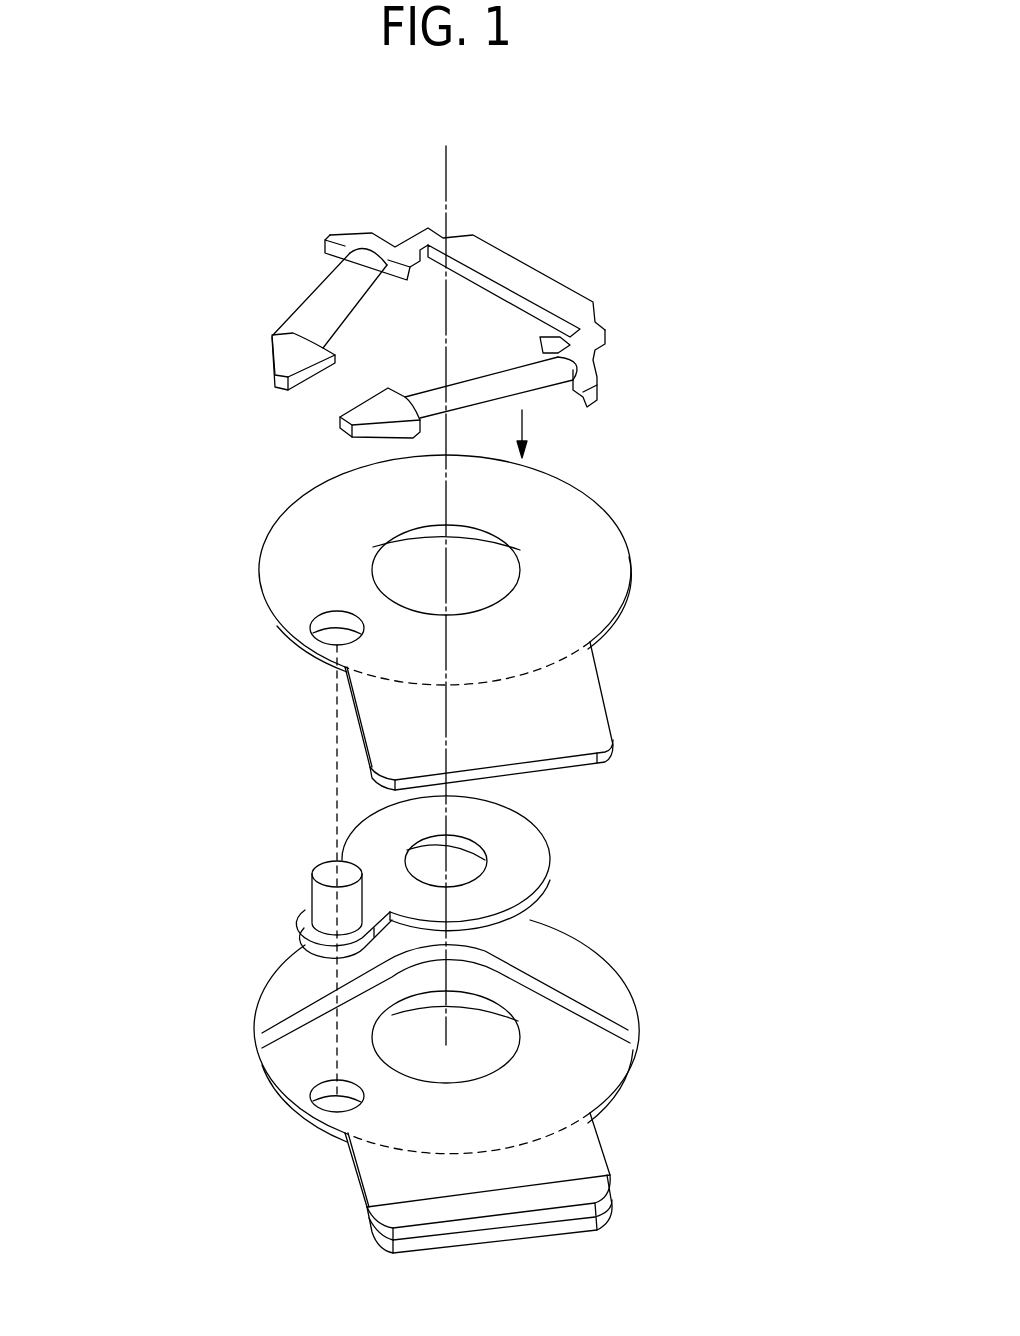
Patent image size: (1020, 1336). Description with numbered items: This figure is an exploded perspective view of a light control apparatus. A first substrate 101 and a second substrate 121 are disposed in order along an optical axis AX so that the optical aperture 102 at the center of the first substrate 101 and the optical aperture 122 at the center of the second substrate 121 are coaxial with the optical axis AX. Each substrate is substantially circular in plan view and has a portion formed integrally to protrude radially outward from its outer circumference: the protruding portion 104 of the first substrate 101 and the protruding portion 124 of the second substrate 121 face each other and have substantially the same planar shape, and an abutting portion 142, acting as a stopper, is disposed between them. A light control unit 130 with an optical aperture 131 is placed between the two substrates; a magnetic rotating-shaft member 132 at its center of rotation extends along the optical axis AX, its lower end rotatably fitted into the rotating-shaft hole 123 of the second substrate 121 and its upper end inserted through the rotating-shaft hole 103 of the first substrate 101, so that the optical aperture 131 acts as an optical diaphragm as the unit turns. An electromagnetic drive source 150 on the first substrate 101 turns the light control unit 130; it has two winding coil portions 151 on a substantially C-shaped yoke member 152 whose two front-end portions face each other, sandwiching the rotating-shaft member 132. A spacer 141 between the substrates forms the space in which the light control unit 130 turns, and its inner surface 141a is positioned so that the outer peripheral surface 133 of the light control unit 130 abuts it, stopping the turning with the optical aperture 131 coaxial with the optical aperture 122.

The optical axis AX is at (447, 183).
The electromagnetic drive source 150 is at (537, 245).
The winding coil portion 151 is at (512, 377).
The yoke member 152 is at (560, 302).
The first substrate 101 is at (543, 503).
The optical aperture 102 is at (520, 550).
The rotating-shaft hole 103 is at (332, 617).
The protruding portion 104 is at (558, 722).
The light control unit 130 is at (548, 813).
The optical aperture 131 is at (485, 860).
The rotating-shaft member 132 is at (328, 873).
The outer peripheral surface 133 is at (533, 907).
The second substrate 121 is at (588, 1073).
The optical aperture 122 is at (518, 1021).
The rotating-shaft hole 123 is at (320, 1083).
The spacer 141 is at (287, 1002).
The inner surface 141a is at (265, 1023).
The protruding portion 124 is at (567, 1153).
The abutting portion 142 is at (595, 1188).